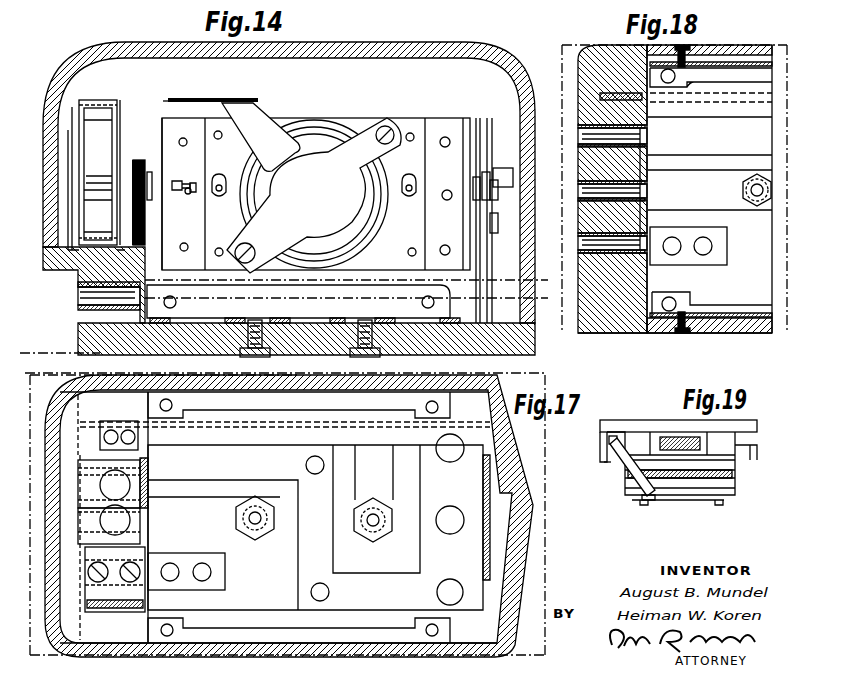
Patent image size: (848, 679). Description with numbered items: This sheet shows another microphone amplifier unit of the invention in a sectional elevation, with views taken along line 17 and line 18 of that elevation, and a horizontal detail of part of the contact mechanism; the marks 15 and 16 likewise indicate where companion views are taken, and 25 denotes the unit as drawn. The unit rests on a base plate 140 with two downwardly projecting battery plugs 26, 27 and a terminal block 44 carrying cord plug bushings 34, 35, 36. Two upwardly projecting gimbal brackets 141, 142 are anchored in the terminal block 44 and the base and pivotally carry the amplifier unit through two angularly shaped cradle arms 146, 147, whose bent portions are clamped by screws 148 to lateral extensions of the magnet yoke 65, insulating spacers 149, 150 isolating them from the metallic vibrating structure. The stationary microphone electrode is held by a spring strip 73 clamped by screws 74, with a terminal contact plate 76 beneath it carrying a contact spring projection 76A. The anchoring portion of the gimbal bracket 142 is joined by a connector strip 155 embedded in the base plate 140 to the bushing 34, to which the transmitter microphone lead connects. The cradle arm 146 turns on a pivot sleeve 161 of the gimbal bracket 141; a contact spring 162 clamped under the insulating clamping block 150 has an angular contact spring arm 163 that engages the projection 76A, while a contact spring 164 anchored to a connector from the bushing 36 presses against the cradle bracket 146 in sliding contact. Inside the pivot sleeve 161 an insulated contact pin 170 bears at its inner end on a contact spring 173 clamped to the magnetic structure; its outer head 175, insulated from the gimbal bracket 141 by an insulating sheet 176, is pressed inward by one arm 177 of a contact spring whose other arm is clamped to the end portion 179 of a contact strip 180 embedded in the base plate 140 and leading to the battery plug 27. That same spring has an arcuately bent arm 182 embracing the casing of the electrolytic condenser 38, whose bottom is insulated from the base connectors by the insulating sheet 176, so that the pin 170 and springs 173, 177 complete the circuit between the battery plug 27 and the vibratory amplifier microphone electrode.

In FIG. 14, the section line 15 is at (43, 190).
In FIG. 14, the section line 16 is at (73, 0).
In FIG. 14, the section line 17— 17 is at (50, 248).
In FIG. 14, the section line 18— 18 is at (78, 297).
In FIG. 18, the housing 25 is at (565, 333).
In FIG. 14, the battery plug 26 is at (270, 356).
In FIG. 18, the battery plug 26 is at (748, 206).
In FIG. 17, the battery plug 26 is at (272, 540).
In FIG. 14, the battery plug 27 is at (352, 356).
In FIG. 17, the battery plug 27 is at (370, 542).
In FIG. 18, the cord plug bushing 34 is at (580, 136).
In FIG. 17, the cord plug bushing 34 is at (78, 465).
In FIG. 14, the cord plug bushing 35 is at (80, 303).
In FIG. 18, the cord plug bushing 35 is at (580, 191).
In FIG. 17, the cord plug bushing 35 is at (78, 517).
In FIG. 18, the cord plug bushing 36 is at (580, 244).
In FIG. 17, the cord plug bushing 36 is at (85, 574).
In FIG. 14, the electrolytic condenser 38 is at (72, 125).
In FIG. 14, the terminal block 44 is at (82, 278).
In FIG. 19, the magnet yoke 65 is at (608, 420).
In FIG. 14, the spring strip 73 is at (316, 160).
In FIG. 19, the spring strip 73 is at (715, 502).
In FIG. 14, the screw 74 is at (390, 128).
In FIG. 14, the terminal contact plate 76 is at (297, 140).
In FIG. 19, the terminal contact plate 76 is at (675, 501).
In FIG. 14, the contact spring projection 76A is at (262, 113).
In FIG. 19, the contact spring projection 76A is at (645, 500).
In FIG. 14, the base plate 140 is at (525, 350).
In FIG. 14, the gimbal bracket 141 is at (142, 160).
In FIG. 14, the gimbal bracket 142 is at (484, 170).
In FIG. 17, the gimbal bracket 142 is at (487, 485).
In FIG. 14, the cradle arm 146 is at (162, 130).
In FIG. 19, the cradle arm 146 is at (607, 442).
In FIG. 19, the cradle arm 147 is at (757, 455).
In FIG. 14, the screw 148 is at (447, 190).
In FIG. 19, the insulating spacer 149 is at (600, 436).
In FIG. 14, the insulating spacer 150 is at (183, 120).
In FIG. 19, the insulating spacer 150 is at (604, 458).
In FIG. 14, the connector strip 155 is at (330, 300).
In FIG. 17, the connector strip 155 is at (365, 572).
In FIG. 14, the pivot sleeve 161 is at (175, 181).
In FIG. 14, the contact spring 162 is at (170, 98).
In FIG. 19, the contact spring 162 is at (616, 437).
In FIG. 14, the contact spring arm 163 is at (240, 98).
In FIG. 19, the contact spring arm 163 is at (632, 492).
In FIG. 14, the contact spring 164 is at (147, 245).
In FIG. 14, the contact pin 170 is at (188, 192).
In FIG. 14, the contact spring 173 is at (200, 182).
In FIG. 14, the head 175 is at (136, 186).
In FIG. 14, the insulating sheet 176 is at (68, 240).
In FIG. 14, the contact spring arm 177 is at (134, 160).
In FIG. 17, the end portion 179 is at (118, 412).
In FIG. 18, the contact strip 180 is at (740, 95).
In FIG. 17, the contact strip 180 is at (224, 425).
In FIG. 14, the arcuately bent arm 182 is at (92, 108).